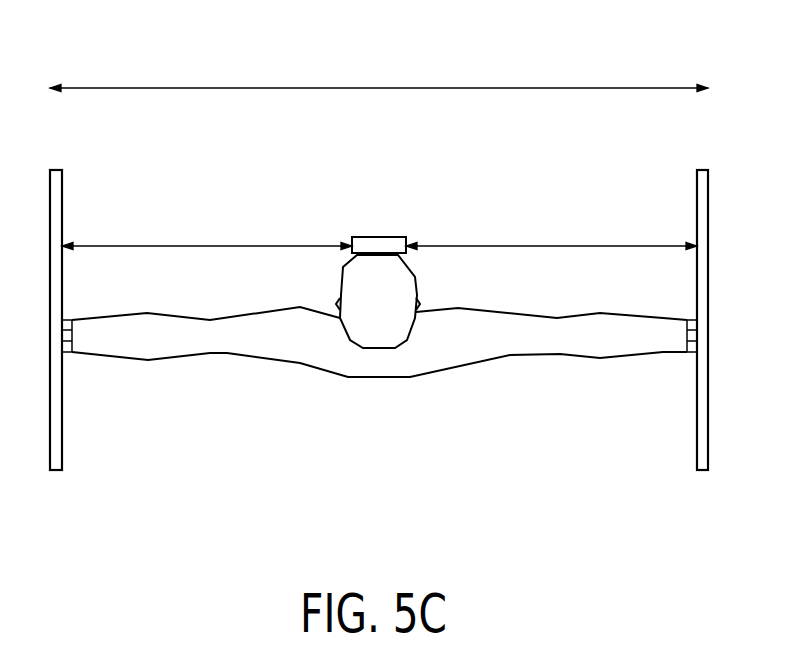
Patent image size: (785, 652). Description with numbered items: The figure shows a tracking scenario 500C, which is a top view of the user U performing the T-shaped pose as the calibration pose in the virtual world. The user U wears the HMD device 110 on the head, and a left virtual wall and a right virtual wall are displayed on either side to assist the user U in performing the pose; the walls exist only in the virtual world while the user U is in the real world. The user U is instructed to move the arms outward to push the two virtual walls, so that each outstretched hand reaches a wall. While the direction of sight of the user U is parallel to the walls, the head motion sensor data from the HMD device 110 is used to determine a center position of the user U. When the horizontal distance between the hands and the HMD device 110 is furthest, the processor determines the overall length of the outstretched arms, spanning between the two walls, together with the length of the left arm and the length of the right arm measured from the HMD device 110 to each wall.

The HMD device 110 is at (402, 237).
The user U is at (417, 290).
The tracking scenario 500C is at (765, 553).